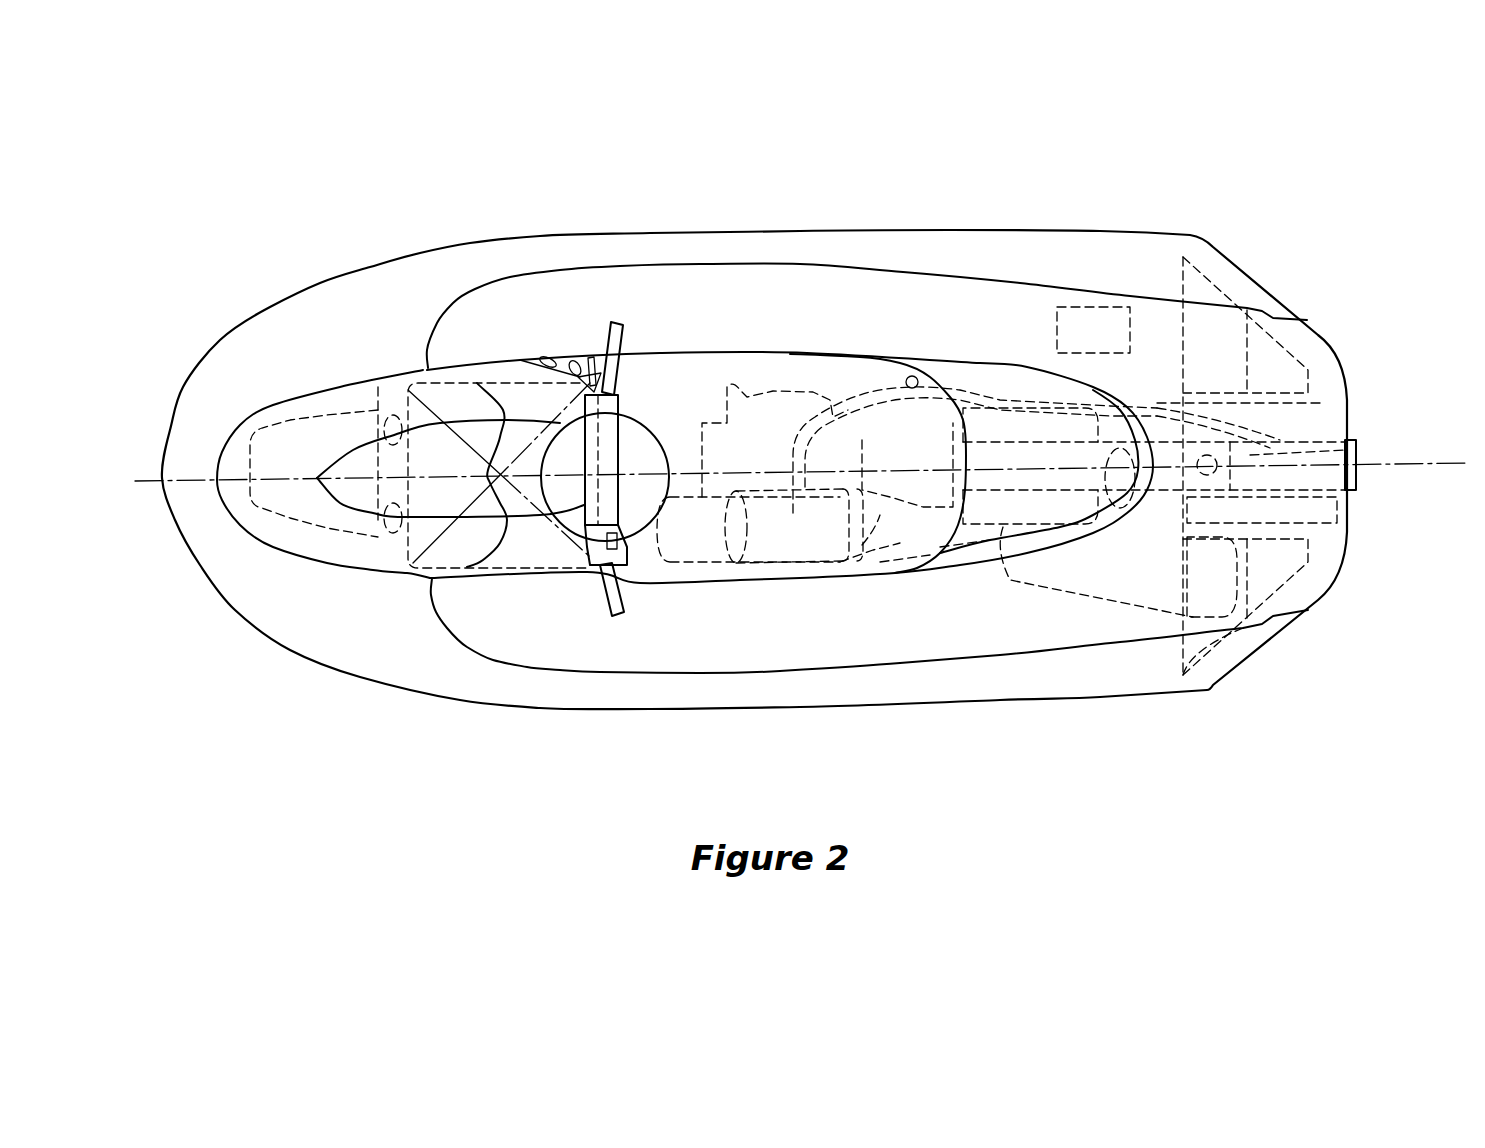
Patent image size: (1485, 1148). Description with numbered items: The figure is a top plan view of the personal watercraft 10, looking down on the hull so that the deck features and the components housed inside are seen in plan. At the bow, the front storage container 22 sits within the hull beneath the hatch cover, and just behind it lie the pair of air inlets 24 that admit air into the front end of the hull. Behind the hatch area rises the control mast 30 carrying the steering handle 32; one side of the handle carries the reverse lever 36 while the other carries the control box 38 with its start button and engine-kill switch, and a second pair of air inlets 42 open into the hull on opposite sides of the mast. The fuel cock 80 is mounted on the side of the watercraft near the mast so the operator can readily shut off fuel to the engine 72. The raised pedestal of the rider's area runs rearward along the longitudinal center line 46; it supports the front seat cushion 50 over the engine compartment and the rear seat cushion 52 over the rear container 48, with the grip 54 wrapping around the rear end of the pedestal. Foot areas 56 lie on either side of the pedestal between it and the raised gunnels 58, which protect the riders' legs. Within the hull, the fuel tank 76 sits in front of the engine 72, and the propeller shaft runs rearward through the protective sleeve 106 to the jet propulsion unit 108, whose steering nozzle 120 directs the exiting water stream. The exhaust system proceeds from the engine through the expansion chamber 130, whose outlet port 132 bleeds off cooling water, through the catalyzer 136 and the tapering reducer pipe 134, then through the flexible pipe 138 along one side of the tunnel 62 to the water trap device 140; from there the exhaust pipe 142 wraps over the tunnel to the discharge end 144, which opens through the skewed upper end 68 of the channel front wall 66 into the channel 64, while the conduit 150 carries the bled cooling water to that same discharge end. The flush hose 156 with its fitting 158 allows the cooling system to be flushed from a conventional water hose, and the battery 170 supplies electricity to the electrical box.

The personal watercraft 10 is at (754, 462).
The front storage container 22 is at (312, 420).
The air inlets 24 is at (395, 410).
The control mast 30 is at (610, 465).
The steering handle 32 is at (618, 340).
The reverse lever 36 is at (563, 353).
The control box 38 is at (629, 549).
The second pair of air inlets 42 is at (595, 347).
The longitudinal center line 46 is at (1437, 461).
The rear container 48 is at (950, 462).
The front seat cushion 50 is at (868, 370).
The rear seat cushion 52 is at (963, 370).
The grip 54 is at (1020, 377).
The foot areas 56 is at (833, 282).
The gunnels 58 is at (968, 248).
The tunnel 62 is at (1160, 507).
The channel 64 is at (1320, 400).
The channel front wall 66 is at (1195, 500).
The upper end of channel front wall 68 is at (1350, 455).
The engine 72 is at (770, 385).
The fuel tank 76 is at (493, 570).
The fuel cock 80 is at (580, 377).
The protective sleeve 106 is at (987, 442).
The jet propulsion unit 108 is at (1317, 492).
The steering nozzle 120 is at (1357, 440).
The expansion chamber 130 is at (768, 568).
The outlet port 132 is at (794, 526).
The reducer pipe 134 is at (907, 560).
The catalyzer 136 is at (880, 560).
The flexible pipe 138 is at (960, 560).
The water trap device 140 is at (1060, 595).
The exhaust pipe 142 is at (1093, 330).
The discharge end 144 is at (1209, 453).
The conduit 150 is at (1157, 400).
The flush hose 156 is at (855, 400).
The fitting 158 is at (918, 370).
The battery 170 is at (1105, 305).